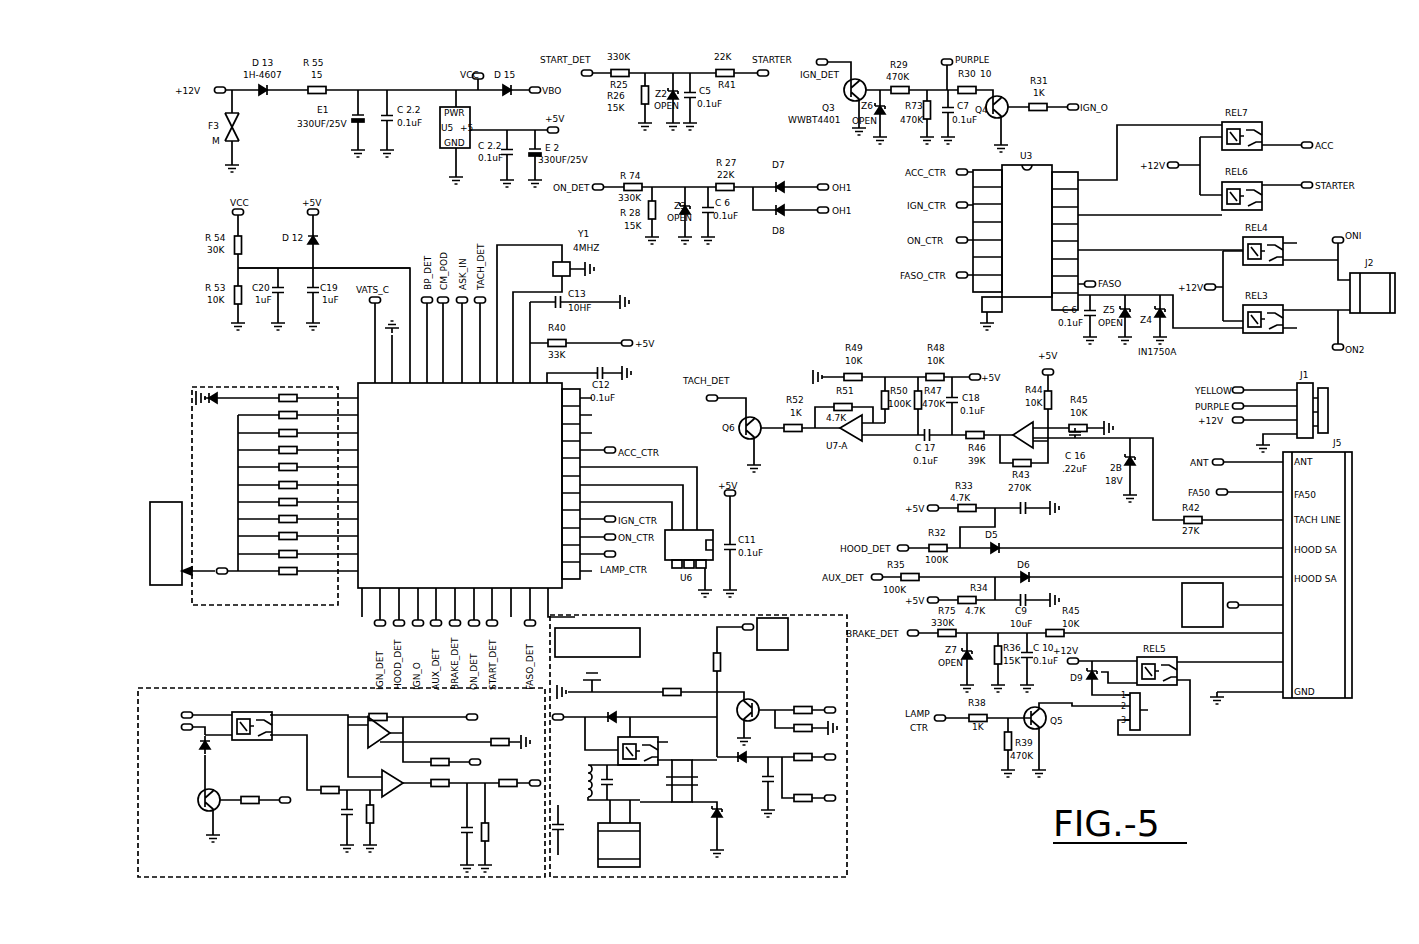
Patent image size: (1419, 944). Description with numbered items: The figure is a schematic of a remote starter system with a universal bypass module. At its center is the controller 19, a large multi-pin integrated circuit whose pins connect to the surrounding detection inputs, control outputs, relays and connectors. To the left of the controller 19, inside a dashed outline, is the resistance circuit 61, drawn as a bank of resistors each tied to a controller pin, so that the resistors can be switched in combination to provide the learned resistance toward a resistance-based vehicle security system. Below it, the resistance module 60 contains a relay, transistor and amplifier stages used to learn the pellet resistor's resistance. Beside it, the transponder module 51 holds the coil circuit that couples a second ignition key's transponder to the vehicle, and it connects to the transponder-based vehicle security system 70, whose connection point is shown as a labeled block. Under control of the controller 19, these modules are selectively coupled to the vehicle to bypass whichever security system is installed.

The controller 19 is at (471, 494).
The resistance circuit 61 is at (200, 386).
The resistance module 60 is at (240, 688).
The transponder module 51 is at (751, 740).
The transponder-based vehicle security system 70 is at (782, 644).